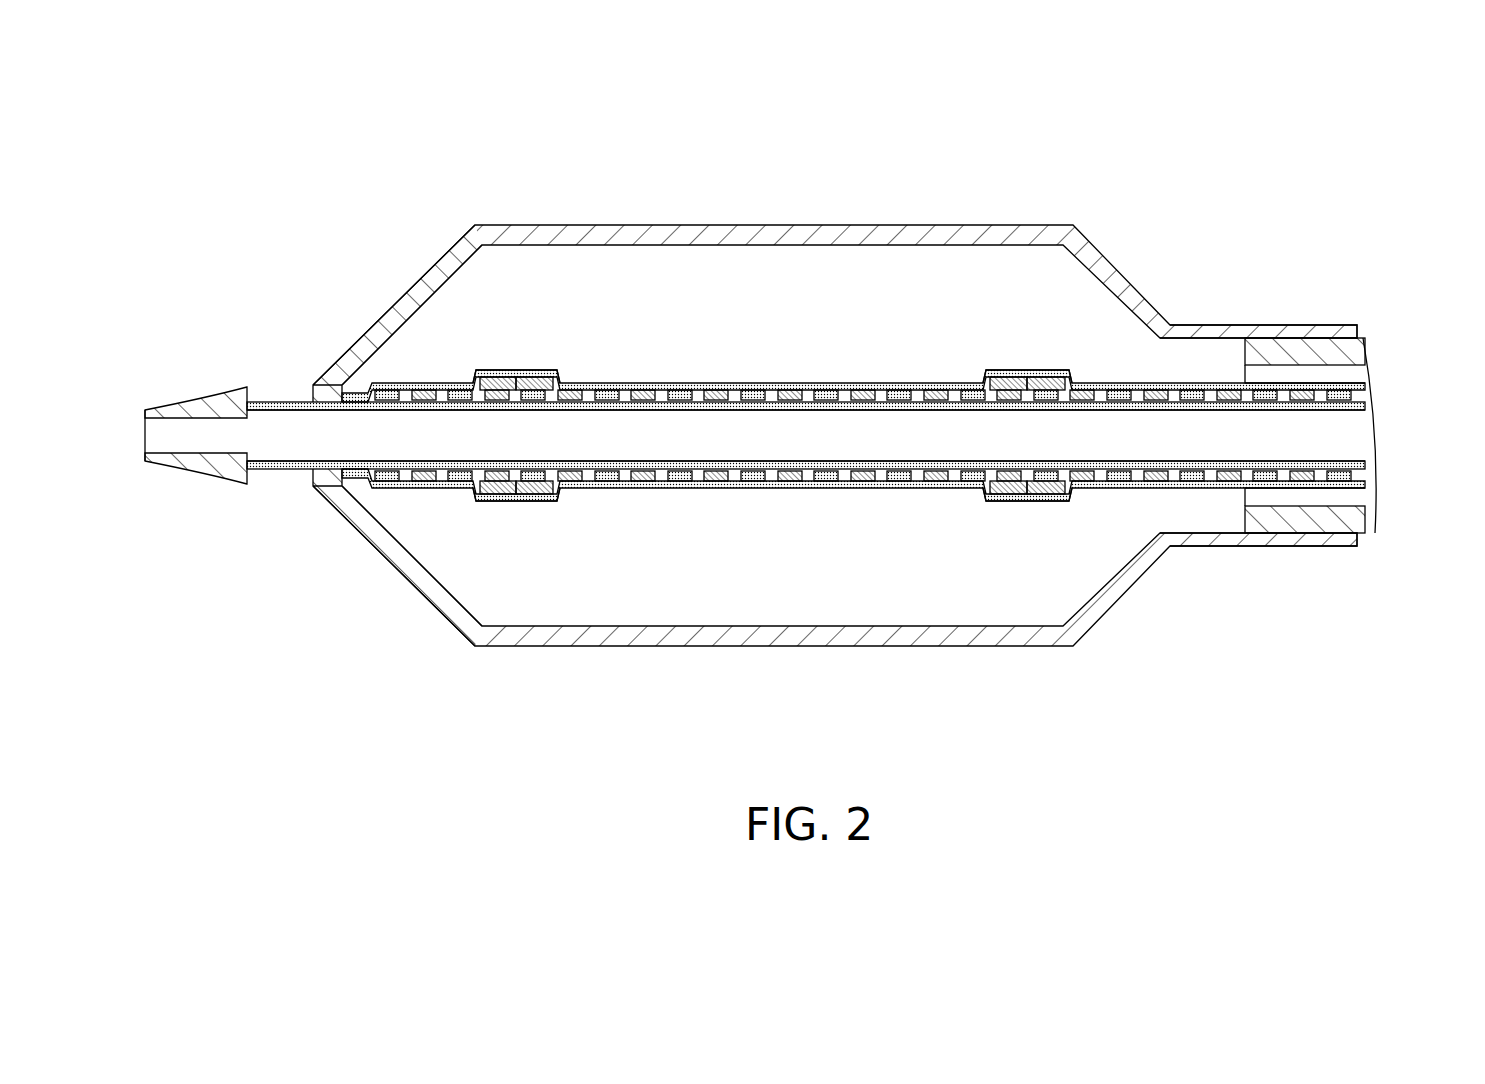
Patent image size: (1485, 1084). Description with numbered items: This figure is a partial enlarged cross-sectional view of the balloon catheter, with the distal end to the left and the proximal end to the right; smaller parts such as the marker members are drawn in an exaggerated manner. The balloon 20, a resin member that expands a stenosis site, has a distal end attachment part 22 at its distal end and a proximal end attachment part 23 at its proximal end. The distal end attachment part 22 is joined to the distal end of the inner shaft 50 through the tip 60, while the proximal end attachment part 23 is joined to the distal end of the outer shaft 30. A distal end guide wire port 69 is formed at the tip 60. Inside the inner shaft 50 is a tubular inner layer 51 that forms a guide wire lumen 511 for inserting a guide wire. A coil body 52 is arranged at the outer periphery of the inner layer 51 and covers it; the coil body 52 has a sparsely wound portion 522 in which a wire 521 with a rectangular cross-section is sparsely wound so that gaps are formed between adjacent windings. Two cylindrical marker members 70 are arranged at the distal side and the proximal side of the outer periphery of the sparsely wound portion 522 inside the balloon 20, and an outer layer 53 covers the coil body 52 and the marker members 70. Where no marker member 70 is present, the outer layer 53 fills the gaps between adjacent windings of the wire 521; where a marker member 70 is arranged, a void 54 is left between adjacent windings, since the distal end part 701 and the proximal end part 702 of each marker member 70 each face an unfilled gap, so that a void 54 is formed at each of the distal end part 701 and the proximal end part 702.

The balloon 20 is at (782, 333).
The distal end attachment part 22 is at (350, 350).
The proximal end attachment part 23 is at (1250, 325).
The outer shaft 30 is at (1305, 338).
The inner shaft 50 is at (858, 404).
The inner layer 51 is at (858, 430).
The guide wire lumen 511 is at (1320, 447).
The coil body 52 is at (863, 568).
The wire 521 is at (680, 482).
The sparsely wound portion 522 is at (848, 482).
The outer layer 53 is at (839, 422).
The void 54 is at (475, 372).
The tip 60 is at (180, 439).
The distal end guide wire port 69 is at (144, 440).
The marker member 70 is at (732, 423).
The distal end part 701 is at (478, 380).
The proximal end part 702 is at (553, 378).